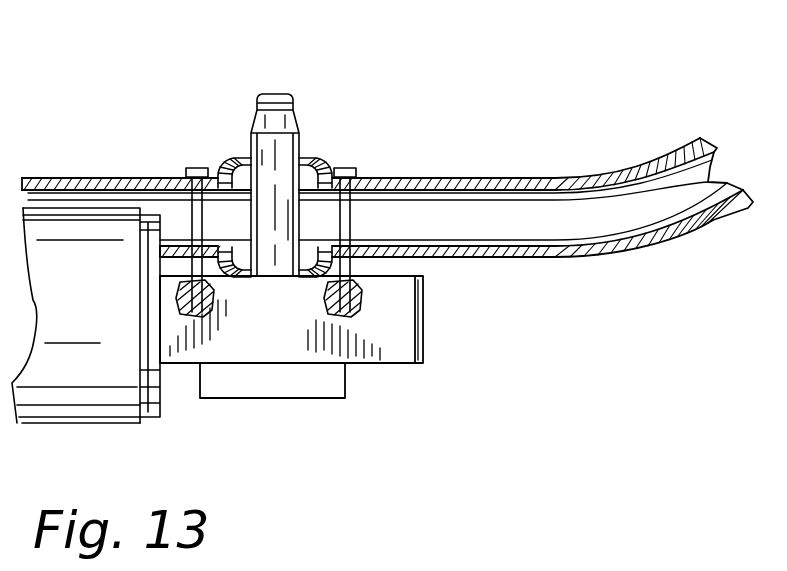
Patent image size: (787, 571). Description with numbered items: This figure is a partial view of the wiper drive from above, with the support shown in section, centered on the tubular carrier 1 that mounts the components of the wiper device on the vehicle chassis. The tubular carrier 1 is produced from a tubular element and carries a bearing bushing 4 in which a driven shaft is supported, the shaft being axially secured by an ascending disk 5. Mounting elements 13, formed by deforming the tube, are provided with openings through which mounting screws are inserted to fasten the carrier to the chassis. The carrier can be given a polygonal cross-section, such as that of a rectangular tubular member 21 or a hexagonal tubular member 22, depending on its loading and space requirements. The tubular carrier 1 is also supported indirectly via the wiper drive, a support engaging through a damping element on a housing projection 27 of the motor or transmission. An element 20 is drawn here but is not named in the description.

The tubular carrier 1 is at (433, 182).
The bearing bushing 4 is at (285, 130).
The ascending disk 5 is at (232, 163).
The mounting element 13 is at (198, 170).
The housing block 20 is at (423, 308).
The rectangular tubular member 21 is at (310, 168).
The hexagonal tubular member 22 is at (302, 277).
The housing projection 27 is at (388, 263).